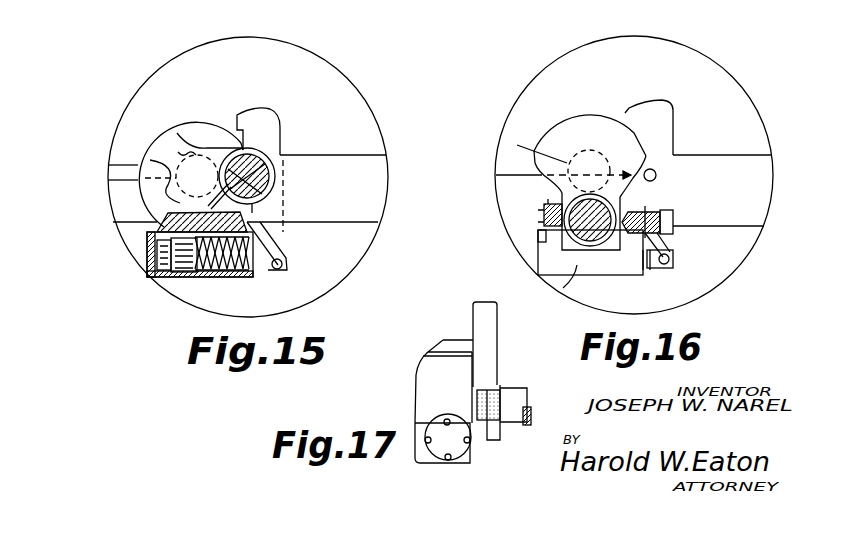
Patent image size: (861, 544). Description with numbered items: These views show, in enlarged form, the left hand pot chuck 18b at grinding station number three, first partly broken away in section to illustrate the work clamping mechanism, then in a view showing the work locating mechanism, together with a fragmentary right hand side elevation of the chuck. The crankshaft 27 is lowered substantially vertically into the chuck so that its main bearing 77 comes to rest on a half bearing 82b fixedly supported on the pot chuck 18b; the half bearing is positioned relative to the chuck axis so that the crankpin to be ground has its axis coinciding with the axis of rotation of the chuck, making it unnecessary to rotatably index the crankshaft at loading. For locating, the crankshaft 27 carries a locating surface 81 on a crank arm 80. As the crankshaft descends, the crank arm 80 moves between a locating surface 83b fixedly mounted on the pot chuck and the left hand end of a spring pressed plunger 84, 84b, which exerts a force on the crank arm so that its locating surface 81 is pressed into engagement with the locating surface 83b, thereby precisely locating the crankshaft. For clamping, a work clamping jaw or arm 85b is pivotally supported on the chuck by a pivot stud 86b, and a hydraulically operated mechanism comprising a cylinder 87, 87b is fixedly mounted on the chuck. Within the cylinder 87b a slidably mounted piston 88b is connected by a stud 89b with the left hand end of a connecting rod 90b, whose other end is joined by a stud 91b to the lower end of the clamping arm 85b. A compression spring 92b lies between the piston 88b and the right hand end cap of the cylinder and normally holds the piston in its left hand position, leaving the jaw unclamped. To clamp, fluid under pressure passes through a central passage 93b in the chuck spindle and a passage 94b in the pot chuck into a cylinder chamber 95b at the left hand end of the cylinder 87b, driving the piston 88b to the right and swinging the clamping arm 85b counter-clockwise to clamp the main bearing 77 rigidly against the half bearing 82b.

In FIG. 15, the pot chuck 18b is at (192, 58).
In FIG. 16, the pot chuck 18b is at (578, 56).
In FIG. 15, the crankshaft 27 is at (180, 121).
In FIG. 16, the crankshaft 27 is at (576, 120).
In FIG. 17, the crankshaft 27 is at (502, 312).
In FIG. 15, the main bearing 77 is at (190, 157).
In FIG. 16, the main bearing 77 is at (513, 141).
In FIG. 17, the main bearing 77 is at (460, 347).
In FIG. 16, the crank arm 80 is at (552, 130).
In FIG. 15, the half bearing surface 82b is at (108, 165).
In FIG. 16, the half bearing surface 82b is at (502, 175).
In FIG. 16, the locating surface 83b is at (543, 221).
In FIG. 17, the spring pressed plunger 84 is at (496, 380).
In FIG. 16, the spring pressed plunger 84b is at (643, 238).
In FIG. 15, the clamping arm 85b is at (263, 117).
In FIG. 16, the clamping arm 85b is at (660, 115).
In FIG. 15, the pivot stud 86b is at (279, 174).
In FIG. 16, the pivot stud 86b is at (657, 175).
In FIG. 17, the cylinder 87 is at (458, 457).
In FIG. 15, the cylinder 87b is at (155, 273).
In FIG. 16, the cylinder 87b is at (563, 288).
In FIG. 15, the piston 88b is at (153, 272).
In FIG. 15, the stud 89b is at (160, 275).
In FIG. 15, the connecting rod 90b is at (268, 266).
In FIG. 16, the connecting rod 90b is at (648, 276).
In FIG. 15, the stud 91b is at (283, 264).
In FIG. 16, the stud 91b is at (669, 262).
In FIG. 15, the compression spring 92b is at (225, 270).
In FIG. 15, the central passage 93b is at (285, 196).
In FIG. 15, the passage 94b is at (140, 191).
In FIG. 15, the cylinder chamber 95b is at (147, 234).
In FIG. 16, the locating surface 81 is at (550, 233).
In FIG. 17, the locating surface 81 is at (505, 428).